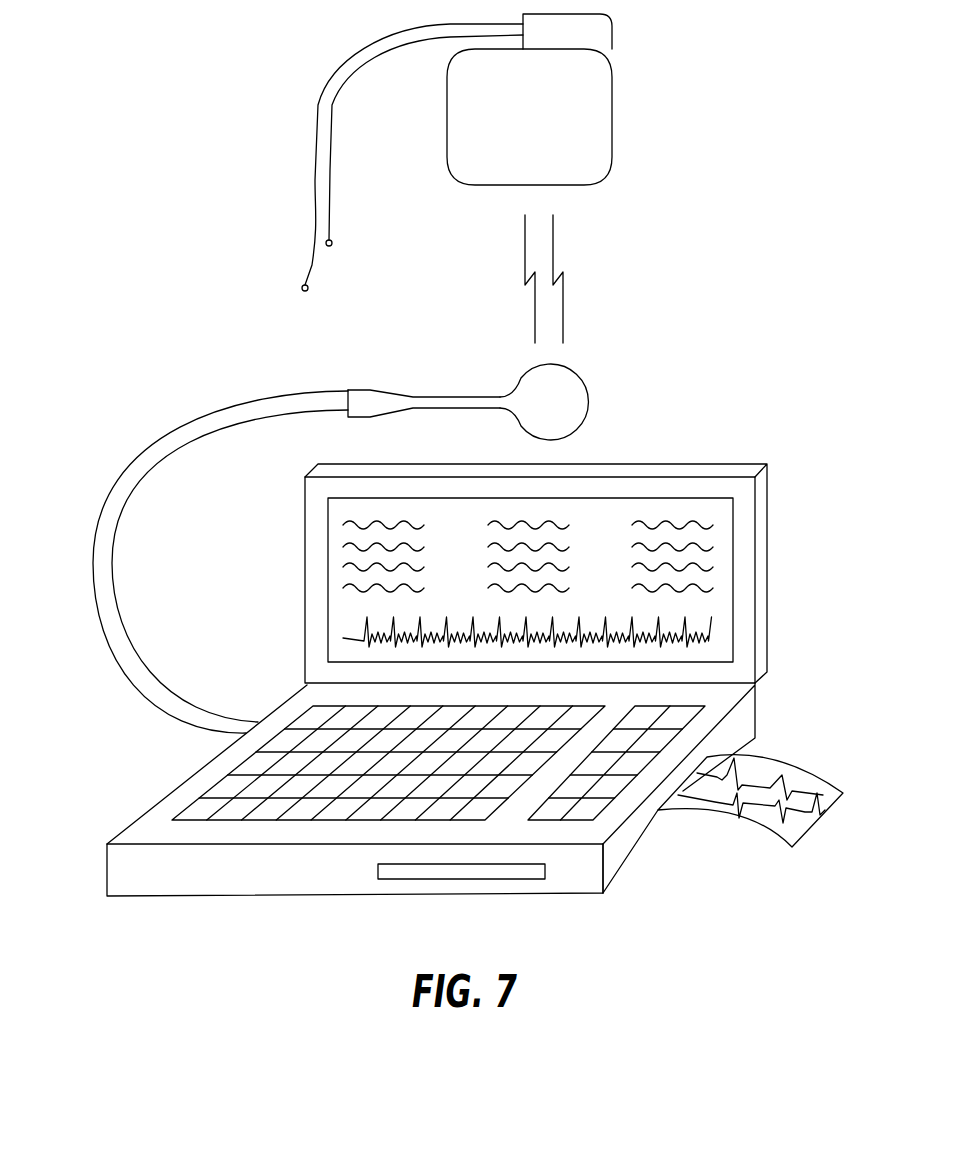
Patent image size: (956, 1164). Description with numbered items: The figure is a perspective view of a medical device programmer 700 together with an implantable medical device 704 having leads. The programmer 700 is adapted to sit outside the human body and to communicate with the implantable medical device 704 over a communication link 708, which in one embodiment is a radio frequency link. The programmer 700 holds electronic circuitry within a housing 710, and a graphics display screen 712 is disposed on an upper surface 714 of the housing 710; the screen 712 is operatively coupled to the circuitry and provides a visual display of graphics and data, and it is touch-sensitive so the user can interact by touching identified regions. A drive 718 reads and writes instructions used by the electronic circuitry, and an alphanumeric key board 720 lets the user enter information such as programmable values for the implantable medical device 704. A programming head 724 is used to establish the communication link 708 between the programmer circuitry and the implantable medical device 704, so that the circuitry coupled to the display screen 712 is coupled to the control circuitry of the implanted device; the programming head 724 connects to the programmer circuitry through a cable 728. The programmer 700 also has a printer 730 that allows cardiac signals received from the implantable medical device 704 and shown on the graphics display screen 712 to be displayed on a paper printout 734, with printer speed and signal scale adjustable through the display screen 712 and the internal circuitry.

The medical device programmer 700 is at (703, 440).
The implantable medical device 704 is at (612, 97).
The communication link 708 is at (563, 306).
The housing 710 is at (627, 853).
The graphics display screen 712 is at (718, 598).
The upper surface 714 is at (137, 834).
The drive 718 is at (432, 872).
The alphanumeric key board 720 is at (575, 788).
The programming head 724 is at (587, 402).
The cable 728 is at (158, 428).
The printer 730 is at (707, 757).
The paper printout 734 is at (762, 823).